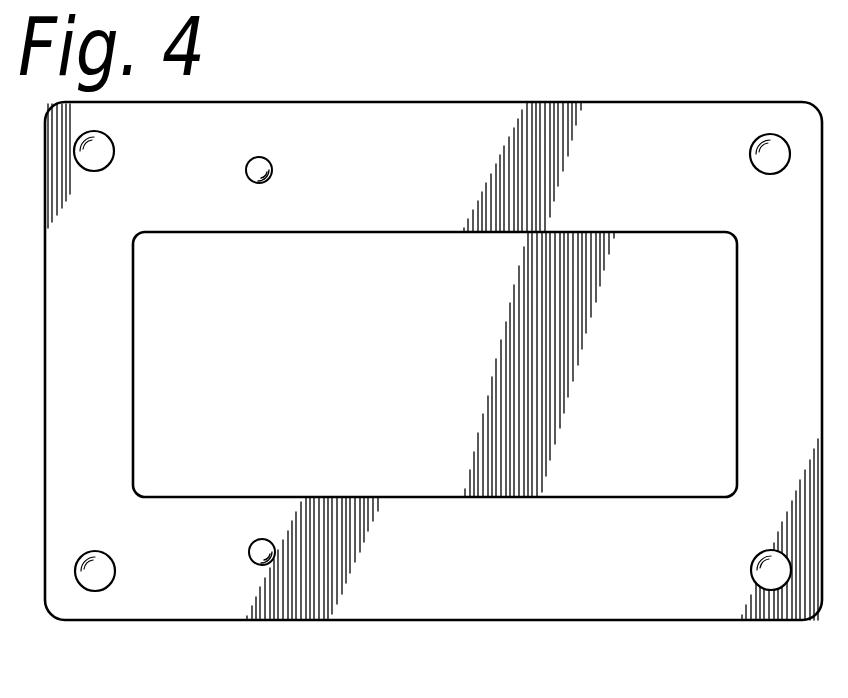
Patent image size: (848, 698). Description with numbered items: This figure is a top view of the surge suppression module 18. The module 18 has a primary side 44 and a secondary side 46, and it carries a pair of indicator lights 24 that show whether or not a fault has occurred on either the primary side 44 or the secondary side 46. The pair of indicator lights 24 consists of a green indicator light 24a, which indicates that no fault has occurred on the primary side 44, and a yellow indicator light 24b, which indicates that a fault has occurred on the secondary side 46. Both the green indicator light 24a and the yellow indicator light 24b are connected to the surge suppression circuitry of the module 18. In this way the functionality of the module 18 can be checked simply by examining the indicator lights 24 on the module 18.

The surge suppression module 18 is at (612, 107).
The indicator lights 24 is at (265, 357).
The green indicator light 24a is at (272, 162).
The yellow indicator light 24b is at (249, 549).
The primary side 44 is at (441, 138).
The secondary side 46 is at (530, 604).